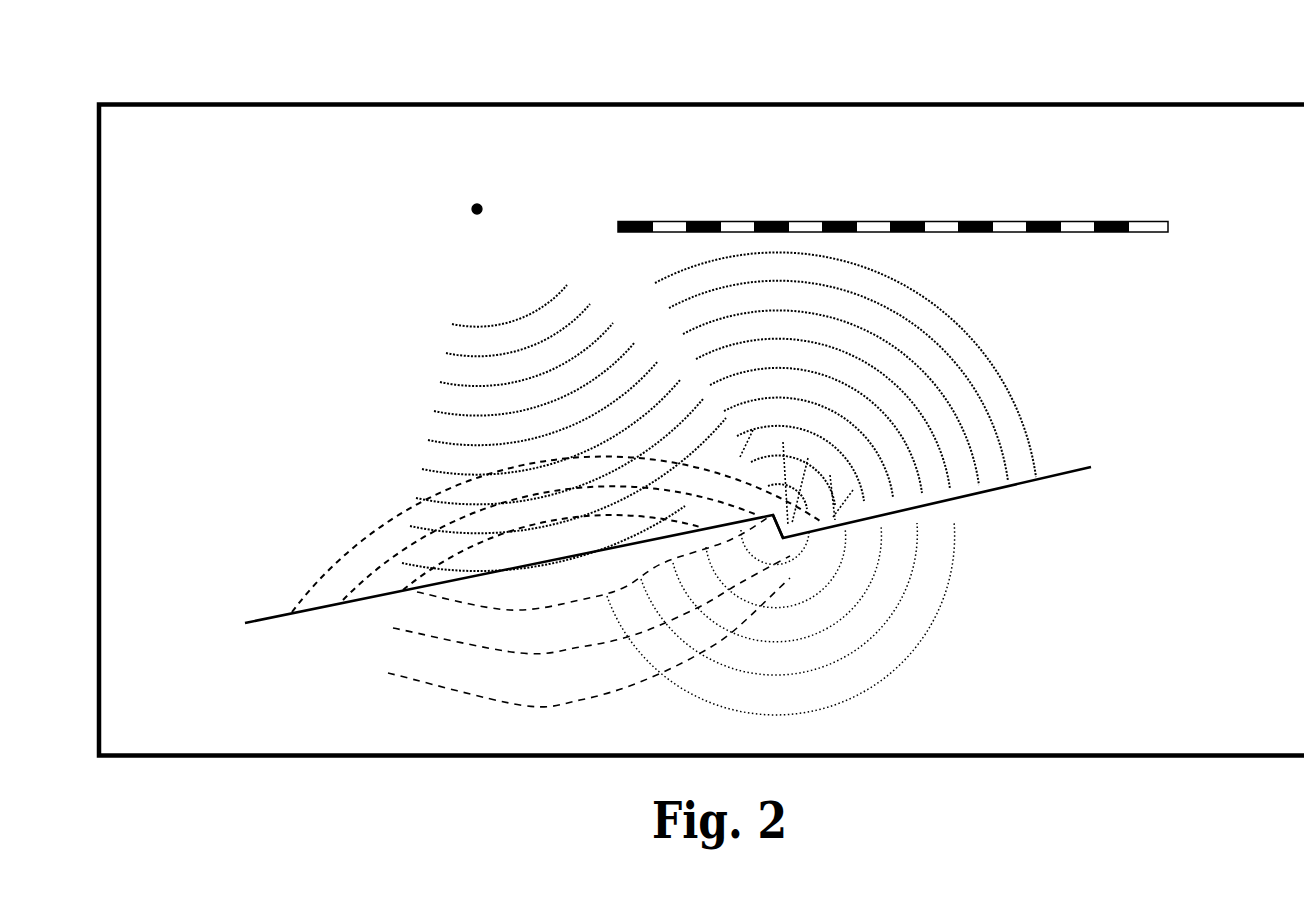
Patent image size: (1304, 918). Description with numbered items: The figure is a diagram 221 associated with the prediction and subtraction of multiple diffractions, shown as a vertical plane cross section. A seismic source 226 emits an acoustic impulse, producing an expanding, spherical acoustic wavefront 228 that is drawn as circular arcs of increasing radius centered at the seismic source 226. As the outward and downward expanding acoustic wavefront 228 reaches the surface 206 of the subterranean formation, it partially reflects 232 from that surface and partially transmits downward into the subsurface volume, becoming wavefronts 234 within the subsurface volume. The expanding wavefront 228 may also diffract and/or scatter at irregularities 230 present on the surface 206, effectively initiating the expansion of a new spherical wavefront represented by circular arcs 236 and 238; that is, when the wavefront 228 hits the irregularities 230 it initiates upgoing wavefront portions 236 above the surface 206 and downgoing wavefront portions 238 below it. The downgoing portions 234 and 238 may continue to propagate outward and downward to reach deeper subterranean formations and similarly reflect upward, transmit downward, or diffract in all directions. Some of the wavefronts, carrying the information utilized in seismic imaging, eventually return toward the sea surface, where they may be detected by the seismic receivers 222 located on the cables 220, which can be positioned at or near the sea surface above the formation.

The surface of the subterranean formation 206 is at (1084, 494).
The cables 220 is at (869, 198).
The diagram 221 is at (1034, 63).
The seismic receivers 222 is at (1053, 241).
The seismic source 226 is at (464, 192).
The acoustic wavefront 228 is at (439, 374).
The irregularities 230 is at (778, 556).
The reflected wavefront 232 is at (400, 536).
The transmitted wavefronts 234 is at (395, 646).
The upgoing wavefront portions 236 is at (969, 350).
The downgoing wavefront portions 238 is at (942, 571).